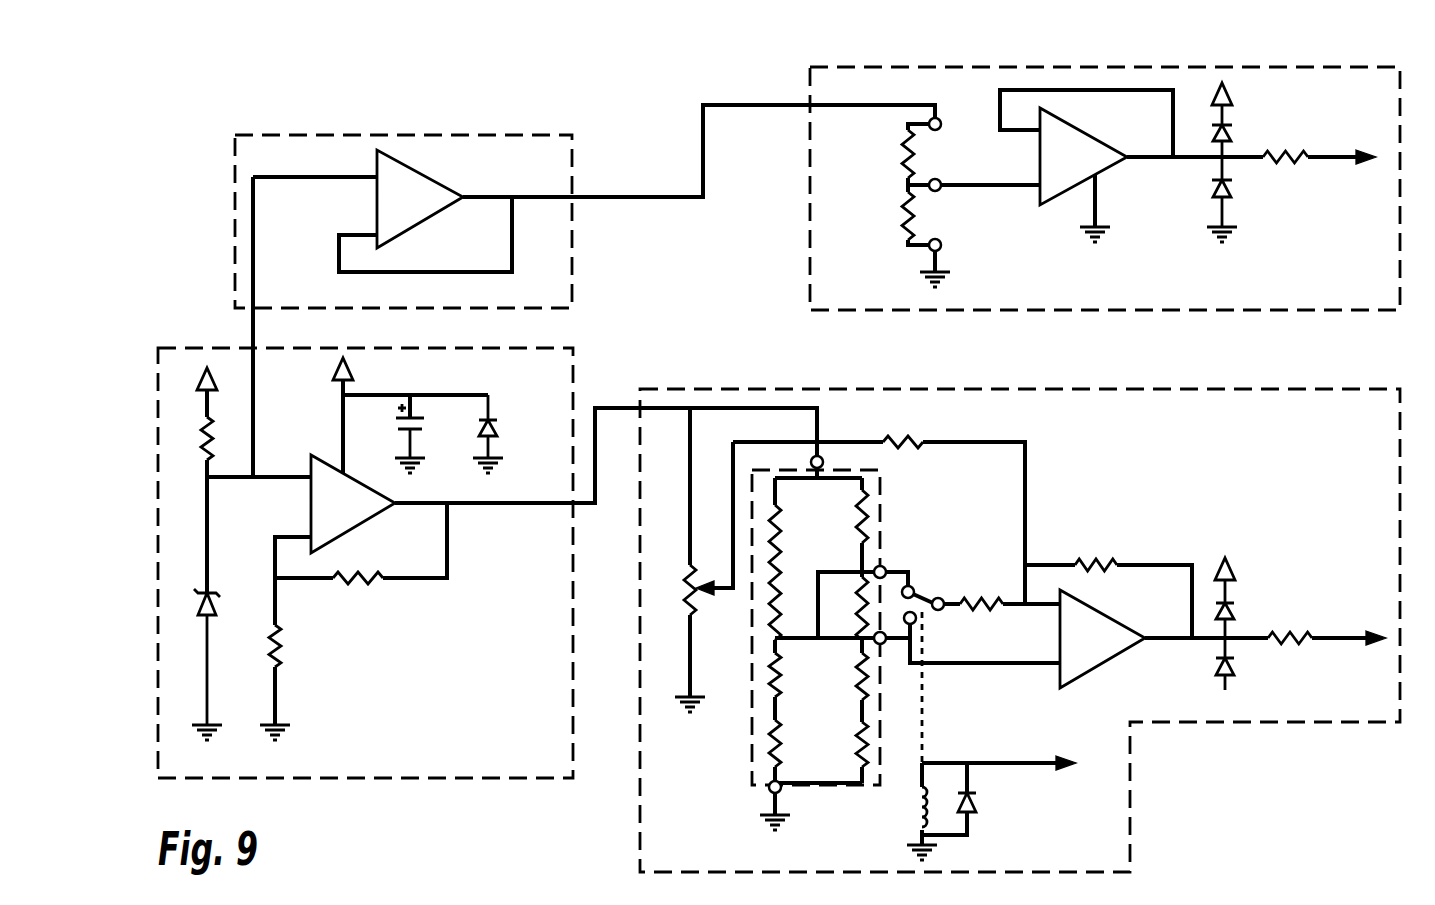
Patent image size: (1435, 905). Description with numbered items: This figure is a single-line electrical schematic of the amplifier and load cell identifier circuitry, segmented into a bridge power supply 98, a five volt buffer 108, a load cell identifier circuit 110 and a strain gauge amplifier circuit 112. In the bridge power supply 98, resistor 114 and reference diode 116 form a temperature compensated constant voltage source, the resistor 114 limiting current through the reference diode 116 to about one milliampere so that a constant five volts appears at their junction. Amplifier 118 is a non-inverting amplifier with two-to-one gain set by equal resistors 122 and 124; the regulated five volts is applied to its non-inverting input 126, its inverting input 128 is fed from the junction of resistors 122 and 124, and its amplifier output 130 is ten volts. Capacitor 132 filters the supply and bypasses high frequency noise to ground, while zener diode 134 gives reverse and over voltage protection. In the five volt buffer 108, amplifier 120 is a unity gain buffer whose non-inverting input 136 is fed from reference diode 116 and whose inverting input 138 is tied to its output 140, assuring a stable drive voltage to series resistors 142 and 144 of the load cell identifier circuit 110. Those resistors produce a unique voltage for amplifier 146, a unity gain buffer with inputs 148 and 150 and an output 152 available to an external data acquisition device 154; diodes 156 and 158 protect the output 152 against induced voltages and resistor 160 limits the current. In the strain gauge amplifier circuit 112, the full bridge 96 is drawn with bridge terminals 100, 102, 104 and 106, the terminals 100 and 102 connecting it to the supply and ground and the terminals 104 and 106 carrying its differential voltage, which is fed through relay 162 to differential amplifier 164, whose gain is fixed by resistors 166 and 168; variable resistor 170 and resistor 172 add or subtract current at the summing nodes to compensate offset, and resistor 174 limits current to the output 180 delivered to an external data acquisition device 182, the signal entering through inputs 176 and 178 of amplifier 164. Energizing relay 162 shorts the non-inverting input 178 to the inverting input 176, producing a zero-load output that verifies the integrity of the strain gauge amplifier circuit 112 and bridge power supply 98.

The full bridge 96 is at (752, 748).
The bridge power supply 98 is at (573, 778).
The bridge excitation terminal 100 is at (820, 450).
The bridge ground terminal 102 is at (782, 791).
The bridge output terminal 104 is at (883, 566).
The bridge output terminal 106 is at (873, 638).
The five volt buffer 108 is at (235, 211).
The load cell identifier circuit 110 is at (810, 150).
The strain gauge amplifier circuit 112 is at (1100, 389).
The resistor 114 is at (207, 425).
The reference diode 116 is at (219, 606).
The amplifier 118 is at (353, 520).
The amplifier 120 is at (410, 218).
The resistor 122 is at (362, 586).
The resistor 124 is at (282, 642).
The non-inverting input 126 is at (287, 477).
The inverting input 128 is at (300, 537).
The amplifier output 130 is at (413, 504).
The capacitor 132 is at (416, 420).
The zener diode 134 is at (493, 426).
The non-inverting input 136 is at (345, 182).
The inverting input 138 is at (350, 235).
The amplifier output 140 is at (474, 197).
The resistor 142 is at (903, 168).
The resistor 144 is at (903, 226).
The amplifier 146 is at (1068, 131).
The input 148 is at (1030, 130).
The input 150 is at (984, 190).
The output 152 is at (1136, 160).
The data acquisition device 154 is at (1374, 162).
The diode 156 is at (1236, 135).
The diode 158 is at (1224, 182).
The resistor 160 is at (1304, 157).
The relay 162 is at (924, 604).
The amplifier 164 is at (1118, 630).
The resistor 166 is at (984, 602).
The resistor 168 is at (1091, 560).
The variable resistor 170 is at (698, 596).
The resistor 172 is at (921, 440).
The resistor 174 is at (1289, 630).
The inverting input 176 is at (1041, 602).
The non-inverting input 178 is at (1036, 667).
The output 180 is at (1161, 641).
The data acquisition device 182 is at (1386, 641).